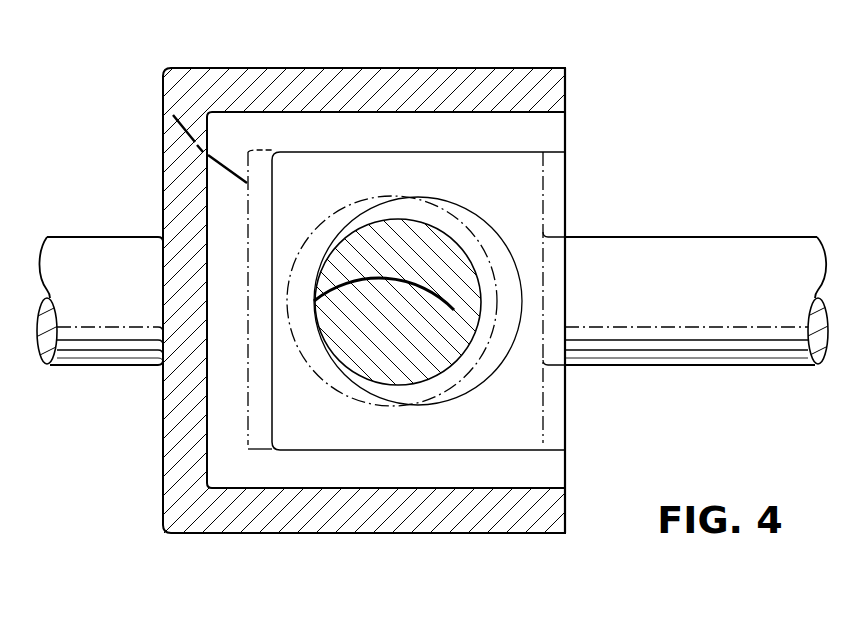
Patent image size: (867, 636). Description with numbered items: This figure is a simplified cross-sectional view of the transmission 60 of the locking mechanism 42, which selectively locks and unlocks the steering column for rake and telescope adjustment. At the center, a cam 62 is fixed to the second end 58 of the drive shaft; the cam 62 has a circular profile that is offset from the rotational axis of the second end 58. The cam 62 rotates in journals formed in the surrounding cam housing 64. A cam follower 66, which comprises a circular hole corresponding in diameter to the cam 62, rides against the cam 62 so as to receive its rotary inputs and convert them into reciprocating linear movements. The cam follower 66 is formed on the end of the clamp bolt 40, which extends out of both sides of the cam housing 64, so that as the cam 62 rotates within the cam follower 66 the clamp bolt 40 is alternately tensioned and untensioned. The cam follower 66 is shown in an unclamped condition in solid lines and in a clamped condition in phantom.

The clamp bolt 40 is at (83, 246).
The locking mechanism 42 is at (160, 498).
The second end of the drive shaft 58 is at (403, 347).
The transmission 60 is at (445, 222).
The cam 62 is at (340, 393).
The cam housing 64 is at (566, 507).
The cam follower 66 is at (164, 101).